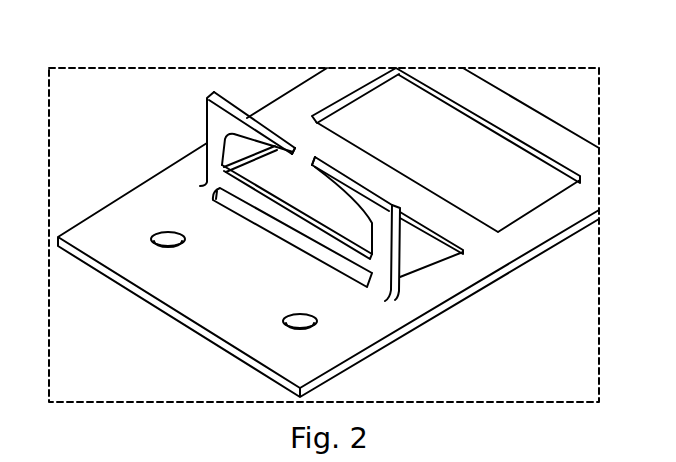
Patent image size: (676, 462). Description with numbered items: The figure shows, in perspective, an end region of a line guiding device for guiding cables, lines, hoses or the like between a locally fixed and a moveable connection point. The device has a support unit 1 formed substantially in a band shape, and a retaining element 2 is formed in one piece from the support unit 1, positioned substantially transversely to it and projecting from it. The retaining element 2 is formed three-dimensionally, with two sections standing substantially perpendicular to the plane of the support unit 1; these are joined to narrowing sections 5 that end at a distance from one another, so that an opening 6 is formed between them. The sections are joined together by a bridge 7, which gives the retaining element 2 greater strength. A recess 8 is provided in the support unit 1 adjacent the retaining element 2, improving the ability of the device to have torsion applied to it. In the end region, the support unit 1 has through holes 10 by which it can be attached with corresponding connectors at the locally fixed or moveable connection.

The support unit 1 is at (535, 228).
The retaining element 2 is at (302, 186).
The narrowing section 5 is at (249, 111).
The opening 6 is at (305, 152).
The bridge 7 is at (295, 221).
The recess 8 is at (487, 150).
The through hole 10 is at (154, 244).